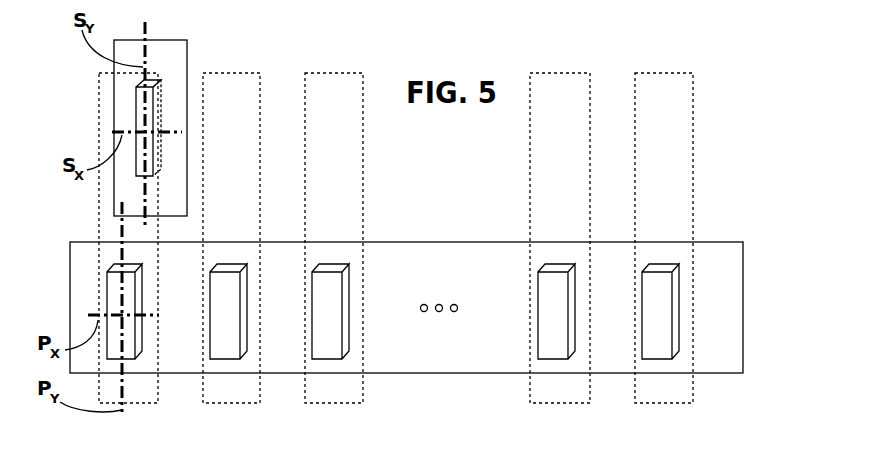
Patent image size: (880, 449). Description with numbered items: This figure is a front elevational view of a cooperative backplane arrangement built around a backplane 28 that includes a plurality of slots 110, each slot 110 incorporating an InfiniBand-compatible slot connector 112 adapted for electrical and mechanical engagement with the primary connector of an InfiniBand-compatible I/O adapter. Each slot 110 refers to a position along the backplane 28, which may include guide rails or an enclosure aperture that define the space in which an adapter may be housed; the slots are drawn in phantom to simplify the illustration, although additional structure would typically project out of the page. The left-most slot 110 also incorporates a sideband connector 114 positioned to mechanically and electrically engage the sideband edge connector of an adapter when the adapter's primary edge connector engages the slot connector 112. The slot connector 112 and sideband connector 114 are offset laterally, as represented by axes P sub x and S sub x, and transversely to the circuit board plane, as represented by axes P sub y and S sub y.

The backplane 28 is at (431, 233).
The slot 110 is at (107, 93).
The slot connector 112 is at (112, 306).
The sideband connector 114 is at (150, 80).